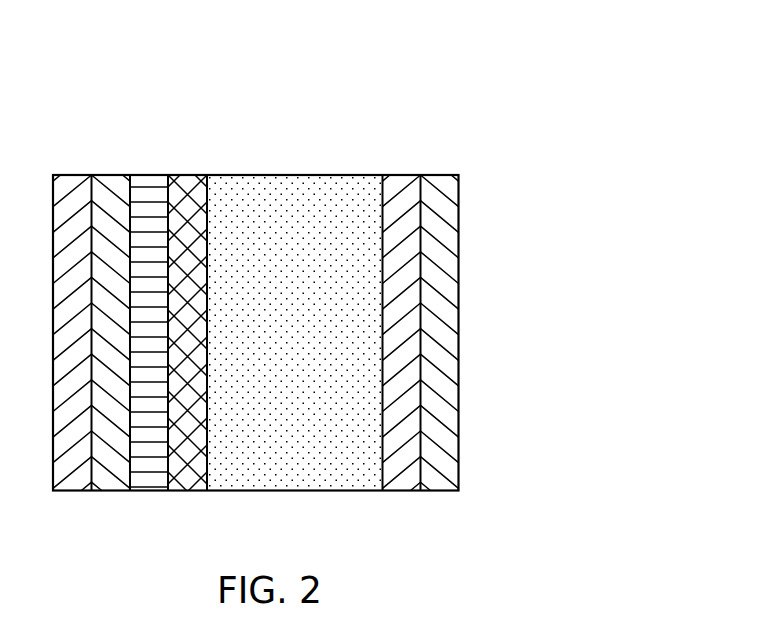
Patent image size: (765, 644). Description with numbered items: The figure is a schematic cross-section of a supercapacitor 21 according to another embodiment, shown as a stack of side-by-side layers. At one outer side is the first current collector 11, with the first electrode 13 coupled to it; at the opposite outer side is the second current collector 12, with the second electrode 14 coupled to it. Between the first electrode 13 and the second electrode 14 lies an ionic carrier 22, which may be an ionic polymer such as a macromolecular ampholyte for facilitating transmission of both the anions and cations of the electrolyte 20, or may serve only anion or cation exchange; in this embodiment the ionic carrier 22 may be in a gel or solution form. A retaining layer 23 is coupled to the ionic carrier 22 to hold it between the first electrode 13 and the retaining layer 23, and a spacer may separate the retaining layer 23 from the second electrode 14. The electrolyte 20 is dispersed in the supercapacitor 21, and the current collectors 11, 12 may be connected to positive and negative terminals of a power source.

The supercapacitor 21 is at (522, 68).
The first current collector 11 is at (70, 180).
The first electrode 13 is at (112, 483).
The ionic carrier 22 is at (148, 180).
The retaining layer 23 is at (188, 483).
The electrolyte 20 is at (295, 481).
The second electrode 14 is at (404, 481).
The second current collector 12 is at (442, 179).